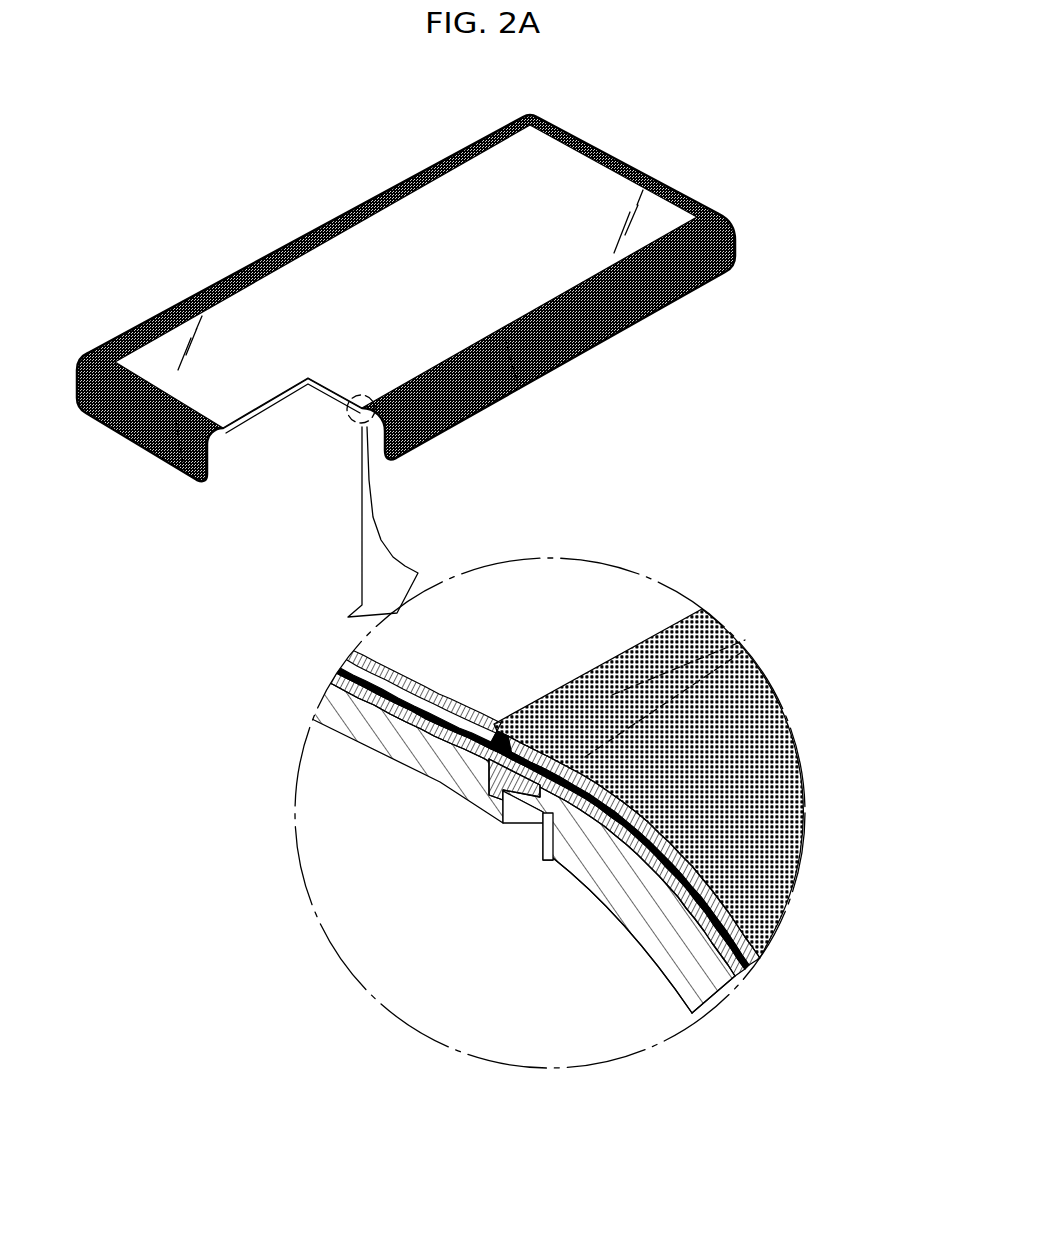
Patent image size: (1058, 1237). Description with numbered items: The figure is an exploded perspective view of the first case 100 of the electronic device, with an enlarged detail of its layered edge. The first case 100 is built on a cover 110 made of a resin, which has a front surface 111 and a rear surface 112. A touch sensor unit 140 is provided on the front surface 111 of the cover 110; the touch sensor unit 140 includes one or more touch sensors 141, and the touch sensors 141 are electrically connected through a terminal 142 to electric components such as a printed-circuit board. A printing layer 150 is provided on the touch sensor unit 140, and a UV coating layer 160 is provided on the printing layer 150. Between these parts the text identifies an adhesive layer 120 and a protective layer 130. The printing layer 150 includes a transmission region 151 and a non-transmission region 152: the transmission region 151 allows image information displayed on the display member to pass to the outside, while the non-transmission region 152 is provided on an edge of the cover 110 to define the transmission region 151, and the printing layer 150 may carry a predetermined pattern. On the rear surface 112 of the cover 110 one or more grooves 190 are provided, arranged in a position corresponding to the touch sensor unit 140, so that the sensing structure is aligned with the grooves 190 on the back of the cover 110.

The first case 100 is at (668, 158).
The cover 110 is at (623, 924).
The front surface 111 is at (728, 992).
The rear surface 112 is at (686, 993).
The adhesive layer 120 is at (741, 981).
The protective layer 130 is at (749, 968).
The touch sensor unit 140 is at (527, 637).
The touch sensor 141 is at (603, 703).
The terminal 142 is at (540, 820).
The printing layer 150 is at (556, 801).
The transmission region 151 is at (352, 649).
The non-transmission region 152 is at (753, 955).
The UV coating layer 160 is at (748, 934).
The groove 190 is at (527, 824).